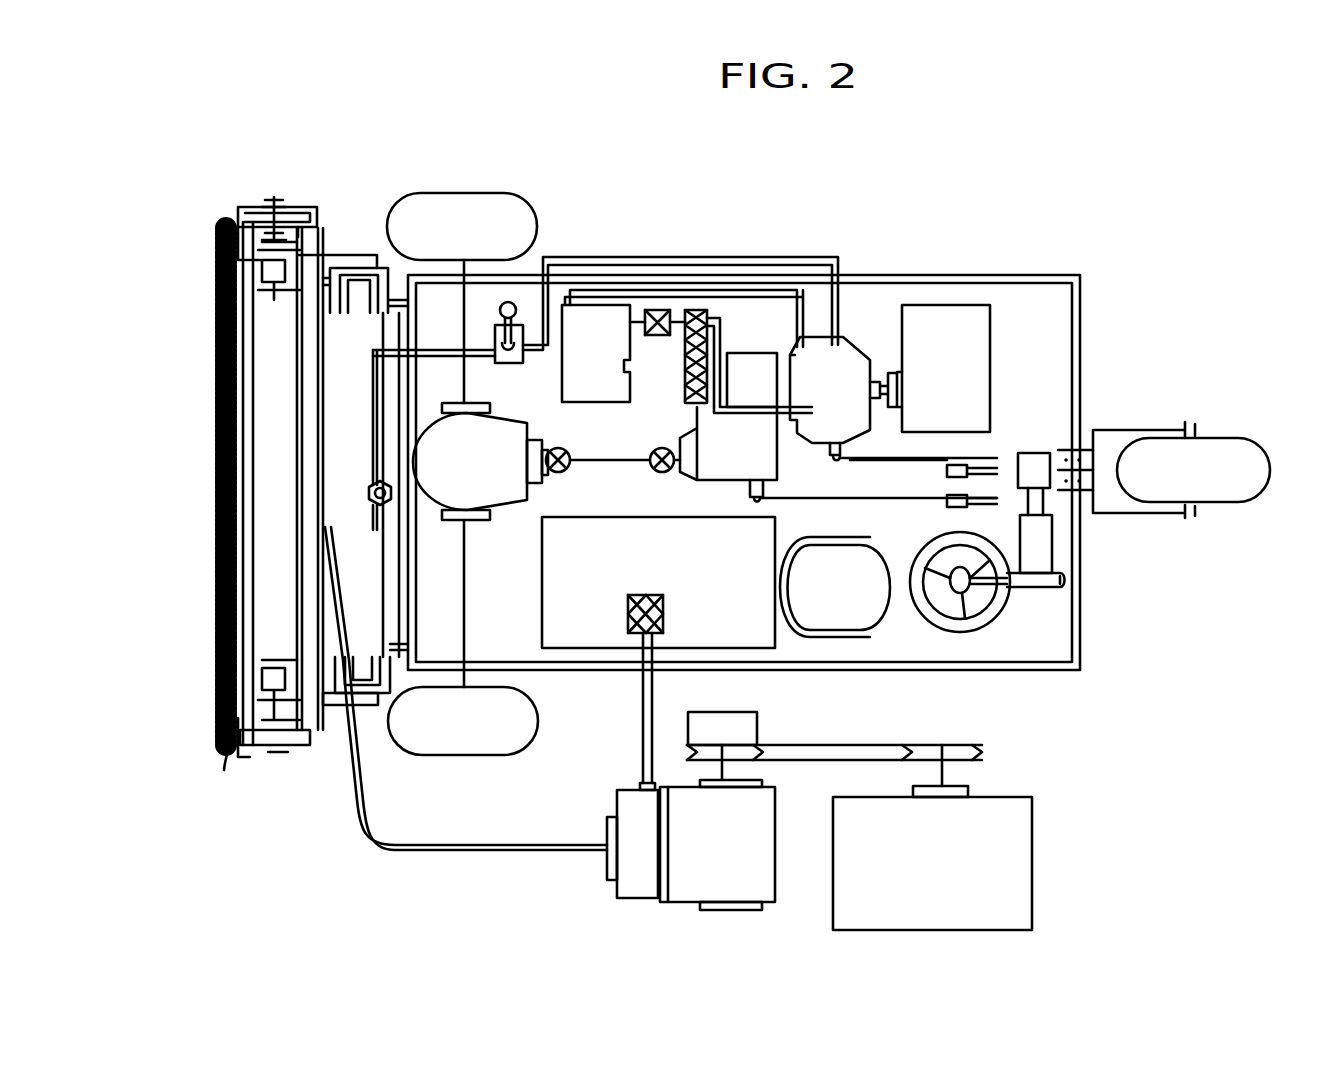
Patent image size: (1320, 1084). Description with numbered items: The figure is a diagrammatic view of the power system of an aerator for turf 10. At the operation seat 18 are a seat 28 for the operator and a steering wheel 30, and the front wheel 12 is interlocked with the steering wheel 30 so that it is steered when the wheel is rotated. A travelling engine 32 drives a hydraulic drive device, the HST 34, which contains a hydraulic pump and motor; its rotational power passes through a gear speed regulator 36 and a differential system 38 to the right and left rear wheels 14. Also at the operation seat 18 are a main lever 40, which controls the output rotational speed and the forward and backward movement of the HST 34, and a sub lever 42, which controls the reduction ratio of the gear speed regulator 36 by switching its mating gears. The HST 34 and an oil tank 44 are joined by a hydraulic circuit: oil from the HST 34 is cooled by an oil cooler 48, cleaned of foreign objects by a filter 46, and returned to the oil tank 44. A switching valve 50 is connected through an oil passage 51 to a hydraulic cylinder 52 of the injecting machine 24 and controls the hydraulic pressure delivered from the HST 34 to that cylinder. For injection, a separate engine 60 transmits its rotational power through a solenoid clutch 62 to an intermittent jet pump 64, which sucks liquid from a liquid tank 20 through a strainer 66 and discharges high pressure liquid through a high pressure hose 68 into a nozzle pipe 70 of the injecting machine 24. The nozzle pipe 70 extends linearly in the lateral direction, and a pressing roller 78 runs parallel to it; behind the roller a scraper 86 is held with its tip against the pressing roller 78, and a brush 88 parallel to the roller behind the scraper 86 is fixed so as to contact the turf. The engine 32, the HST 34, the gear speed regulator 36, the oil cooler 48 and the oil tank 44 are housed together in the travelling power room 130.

The aerator for turf 10 is at (968, 198).
The front wheel 12 is at (1236, 457).
The rear wheels 14 is at (490, 213).
The operation seat 18 is at (1037, 611).
The liquid tank 20 is at (678, 645).
The injecting machine 24 is at (292, 466).
The seat 28 is at (882, 610).
The steering wheel 30 is at (985, 613).
The travelling engine 32 is at (960, 328).
The hydraulic drive device (HST) 34 is at (850, 356).
The gear speed regulator 36 is at (752, 367).
The differential system 38 is at (505, 490).
The main lever 40 is at (958, 465).
The sub lever 42 is at (945, 501).
The oil tank 44 is at (598, 320).
The filter 46 is at (657, 310).
The oil cooler 48 is at (697, 310).
The switching valve 50 is at (512, 302).
The oil passage 51 is at (440, 348).
The hydraulic cylinder 52 is at (393, 500).
The engine 60 is at (1013, 828).
The solenoid clutch 62 is at (722, 728).
The intermittent jet pump 64 is at (768, 892).
The strainer 66 is at (645, 595).
The high pressure hose 68 is at (438, 851).
The nozzle pipe 70 is at (318, 240).
The pressing roller 78 is at (278, 350).
The scraper 86 is at (262, 760).
The brush 88 is at (240, 745).
The travelling power room 130 is at (900, 303).